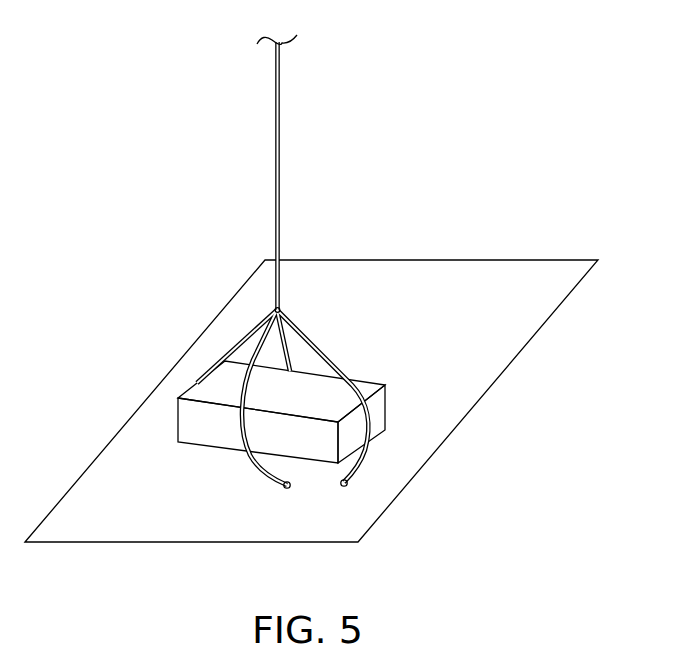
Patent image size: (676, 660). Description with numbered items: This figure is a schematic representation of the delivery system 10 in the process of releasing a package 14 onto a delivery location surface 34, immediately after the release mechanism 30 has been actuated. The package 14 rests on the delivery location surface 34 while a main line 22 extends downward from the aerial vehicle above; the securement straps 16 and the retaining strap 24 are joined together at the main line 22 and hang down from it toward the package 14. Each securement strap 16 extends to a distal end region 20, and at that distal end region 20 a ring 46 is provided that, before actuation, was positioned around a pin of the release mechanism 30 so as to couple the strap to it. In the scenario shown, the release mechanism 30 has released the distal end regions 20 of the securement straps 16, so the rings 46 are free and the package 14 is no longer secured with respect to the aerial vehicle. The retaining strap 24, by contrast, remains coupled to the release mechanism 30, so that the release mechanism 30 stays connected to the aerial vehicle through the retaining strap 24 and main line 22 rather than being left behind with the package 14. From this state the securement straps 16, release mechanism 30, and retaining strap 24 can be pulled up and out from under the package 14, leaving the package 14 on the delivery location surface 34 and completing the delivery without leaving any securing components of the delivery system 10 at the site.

The delivery system 10 is at (407, 92).
The package 14 is at (197, 430).
The securement straps 16 is at (233, 350).
The distal end region 20 is at (268, 491).
The main line 22 is at (280, 108).
The retaining strap 24 is at (284, 347).
The release mechanism 30 is at (303, 360).
The delivery location surface 34 is at (455, 272).
The ring 46 is at (287, 489).